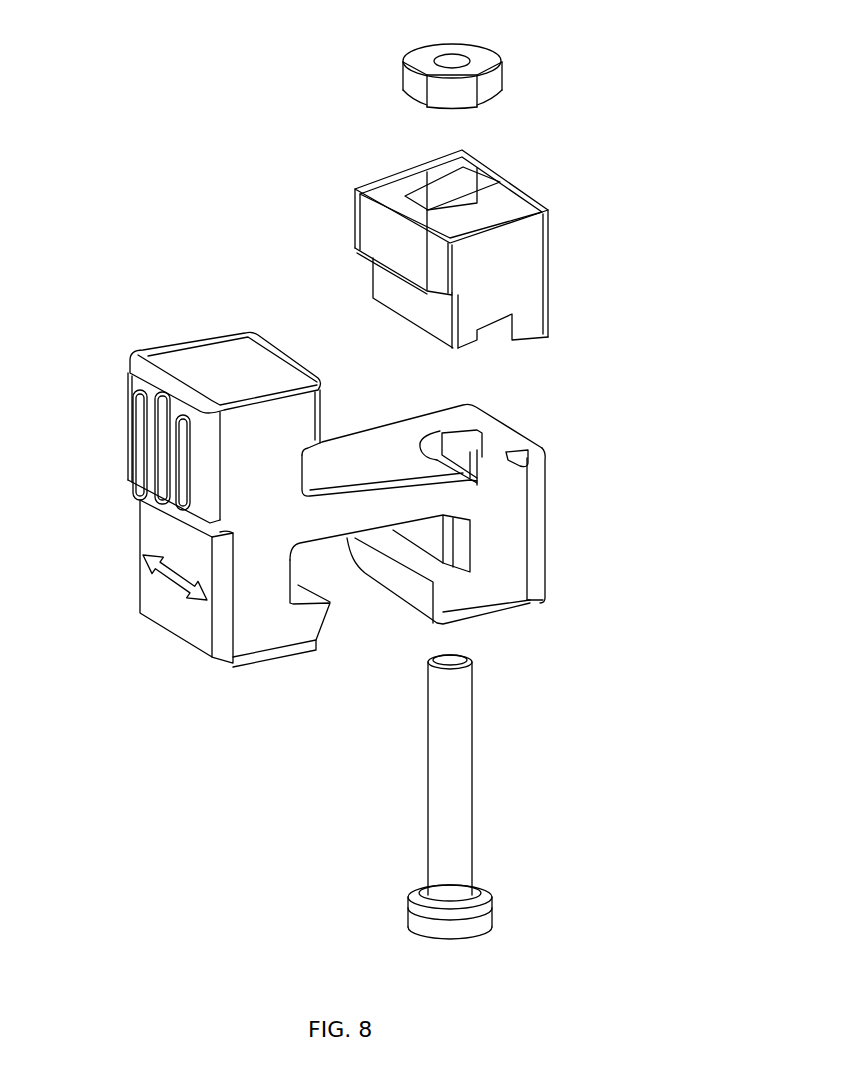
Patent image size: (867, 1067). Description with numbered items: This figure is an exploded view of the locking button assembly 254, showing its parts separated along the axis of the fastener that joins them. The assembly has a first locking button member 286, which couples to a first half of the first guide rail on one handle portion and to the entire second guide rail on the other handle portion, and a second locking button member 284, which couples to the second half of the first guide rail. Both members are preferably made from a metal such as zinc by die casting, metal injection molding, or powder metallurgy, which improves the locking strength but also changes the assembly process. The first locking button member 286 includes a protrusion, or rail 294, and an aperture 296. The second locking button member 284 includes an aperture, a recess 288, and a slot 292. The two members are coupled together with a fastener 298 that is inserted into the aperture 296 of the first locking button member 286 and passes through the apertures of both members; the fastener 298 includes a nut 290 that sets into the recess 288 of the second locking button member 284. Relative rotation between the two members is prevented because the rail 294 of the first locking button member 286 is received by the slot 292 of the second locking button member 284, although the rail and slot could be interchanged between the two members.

The locking button assembly 254 is at (652, 238).
The second locking button member 284 is at (348, 168).
The first locking button member 286 is at (97, 484).
The recess 288 is at (440, 200).
The nut 290 is at (403, 68).
The slot 292 is at (495, 328).
The rail 294 is at (510, 447).
The aperture 296 is at (425, 437).
The fastener 298 is at (430, 818).